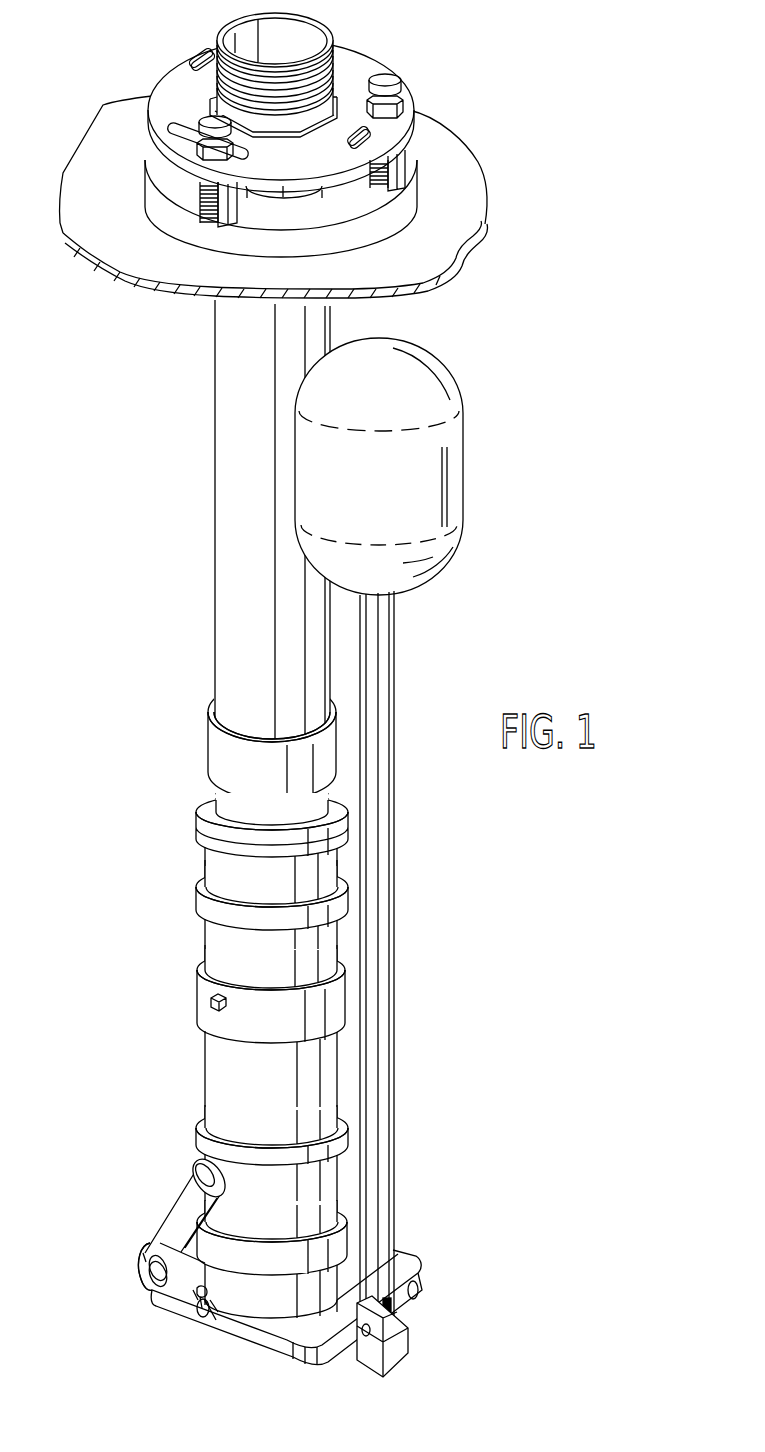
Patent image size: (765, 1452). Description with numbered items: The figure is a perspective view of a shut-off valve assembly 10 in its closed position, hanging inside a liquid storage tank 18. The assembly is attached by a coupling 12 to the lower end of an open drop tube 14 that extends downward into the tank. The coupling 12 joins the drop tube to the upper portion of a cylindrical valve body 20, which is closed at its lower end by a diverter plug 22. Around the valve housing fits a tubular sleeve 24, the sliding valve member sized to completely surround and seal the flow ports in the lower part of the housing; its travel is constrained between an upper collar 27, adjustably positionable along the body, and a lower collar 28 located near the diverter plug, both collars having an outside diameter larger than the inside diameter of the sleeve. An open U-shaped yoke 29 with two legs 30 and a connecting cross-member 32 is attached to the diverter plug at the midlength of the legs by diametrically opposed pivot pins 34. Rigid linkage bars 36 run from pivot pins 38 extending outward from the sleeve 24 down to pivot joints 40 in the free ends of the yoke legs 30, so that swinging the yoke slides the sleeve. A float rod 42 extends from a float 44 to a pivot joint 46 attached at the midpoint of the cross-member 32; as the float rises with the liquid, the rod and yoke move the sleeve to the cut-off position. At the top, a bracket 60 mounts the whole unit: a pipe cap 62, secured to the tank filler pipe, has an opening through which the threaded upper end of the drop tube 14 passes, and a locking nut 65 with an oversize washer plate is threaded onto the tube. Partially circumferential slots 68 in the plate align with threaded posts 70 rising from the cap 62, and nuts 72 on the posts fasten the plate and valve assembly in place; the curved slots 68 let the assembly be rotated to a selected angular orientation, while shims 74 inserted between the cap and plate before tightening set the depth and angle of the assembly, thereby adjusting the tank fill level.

The shut-off valve assembly 10 is at (176, 1073).
The coupling 12 is at (207, 858).
The drop tube 14 is at (215, 647).
The liquid storage tank 18 is at (487, 203).
The valve body 20 is at (208, 1082).
The diverter plug 22 is at (407, 1258).
The sleeve 24 is at (350, 1170).
The upper collar 27 is at (348, 988).
The lower collar 28 is at (350, 1240).
The yoke 29 is at (245, 1333).
The yoke legs 30 is at (417, 1320).
The cross-member 32 is at (400, 1326).
The pivot pins 34 is at (200, 1315).
The linkage bars 36 is at (175, 1198).
The pivot pins 38 is at (198, 1168).
The pivot joints 40 is at (140, 1253).
The float rod 42 is at (397, 900).
The float 44 is at (463, 493).
The pivot joint 46 is at (400, 1358).
The bracket 60 is at (449, 91).
The pipe cap 62 is at (416, 207).
The locking nut 65 is at (336, 92).
The slots 68 is at (206, 54).
The threaded posts 70 is at (398, 88).
The nuts 72 is at (413, 112).
The shims 74 is at (411, 170).